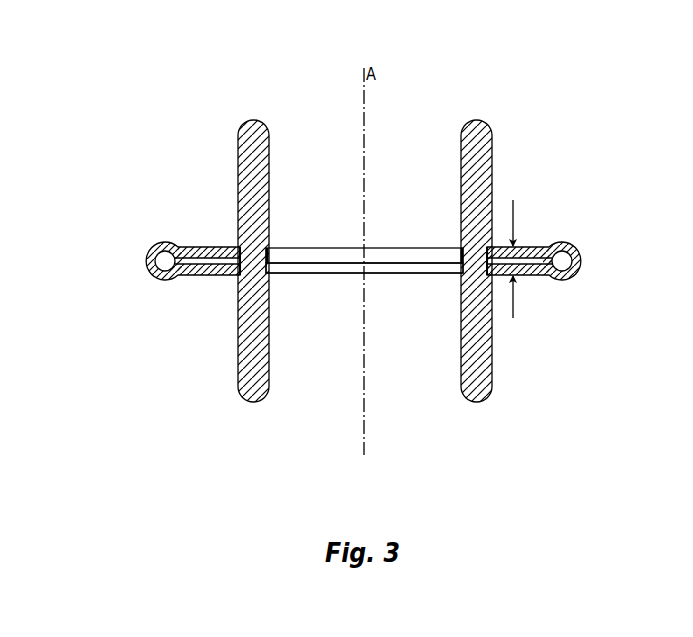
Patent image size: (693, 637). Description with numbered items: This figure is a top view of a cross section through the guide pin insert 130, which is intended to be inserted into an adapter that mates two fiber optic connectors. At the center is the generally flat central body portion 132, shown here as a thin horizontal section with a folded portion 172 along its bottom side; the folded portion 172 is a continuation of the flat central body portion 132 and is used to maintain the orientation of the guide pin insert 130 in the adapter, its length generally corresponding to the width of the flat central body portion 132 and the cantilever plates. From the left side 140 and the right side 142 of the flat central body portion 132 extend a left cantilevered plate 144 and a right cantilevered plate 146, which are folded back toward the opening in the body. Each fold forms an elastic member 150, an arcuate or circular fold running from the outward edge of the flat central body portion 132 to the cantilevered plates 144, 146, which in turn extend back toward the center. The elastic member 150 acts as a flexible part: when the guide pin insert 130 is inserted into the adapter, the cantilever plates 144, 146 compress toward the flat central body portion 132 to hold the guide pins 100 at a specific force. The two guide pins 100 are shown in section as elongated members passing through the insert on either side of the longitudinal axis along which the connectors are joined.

The guide pin 100 is at (250, 120).
The guide pin insert 130 is at (168, 221).
The flat central body portion 132 is at (425, 248).
The left side 140 is at (146, 288).
The right side 142 is at (588, 219).
The left cantilevered plate 144 is at (200, 277).
The right cantilevered plate 146 is at (530, 277).
The elastic member 150 is at (146, 262).
The folded portion 172 is at (410, 274).